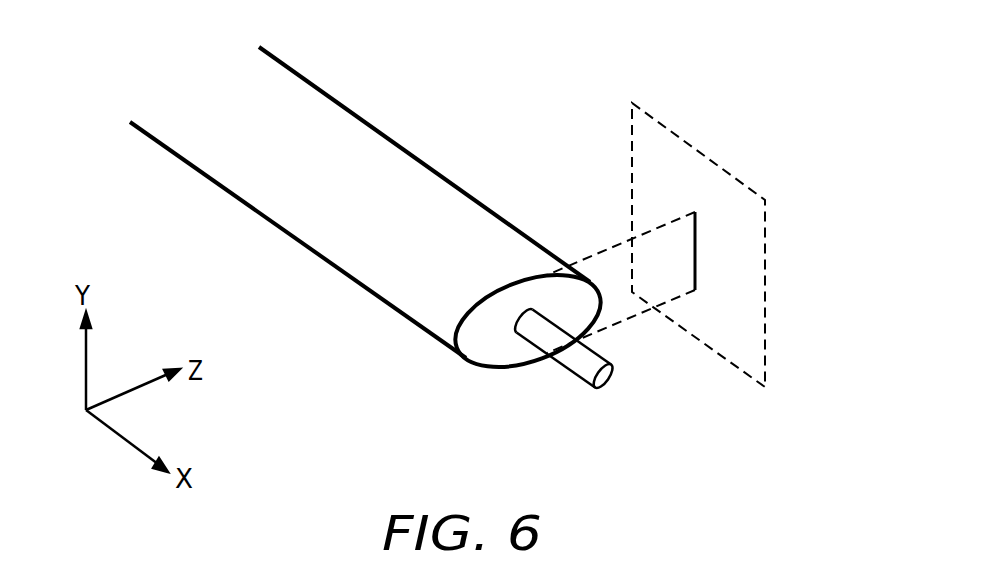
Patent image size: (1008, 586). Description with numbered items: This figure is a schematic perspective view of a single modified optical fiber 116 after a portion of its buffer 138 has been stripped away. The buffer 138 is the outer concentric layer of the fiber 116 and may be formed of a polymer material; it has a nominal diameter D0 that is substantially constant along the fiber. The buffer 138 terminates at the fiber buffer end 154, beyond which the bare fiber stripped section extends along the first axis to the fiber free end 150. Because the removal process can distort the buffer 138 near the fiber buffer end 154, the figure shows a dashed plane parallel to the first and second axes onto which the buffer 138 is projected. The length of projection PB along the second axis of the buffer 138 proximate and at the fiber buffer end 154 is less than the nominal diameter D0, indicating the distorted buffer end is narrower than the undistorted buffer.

The buffer 138 is at (305, 108).
The fiber 116 is at (203, 142).
The fiber buffer end 154 is at (487, 342).
The fiber free end 150 is at (602, 377).
The nominal diameter of the buffer D0 is at (405, 153).
The length of projection PB is at (695, 250).